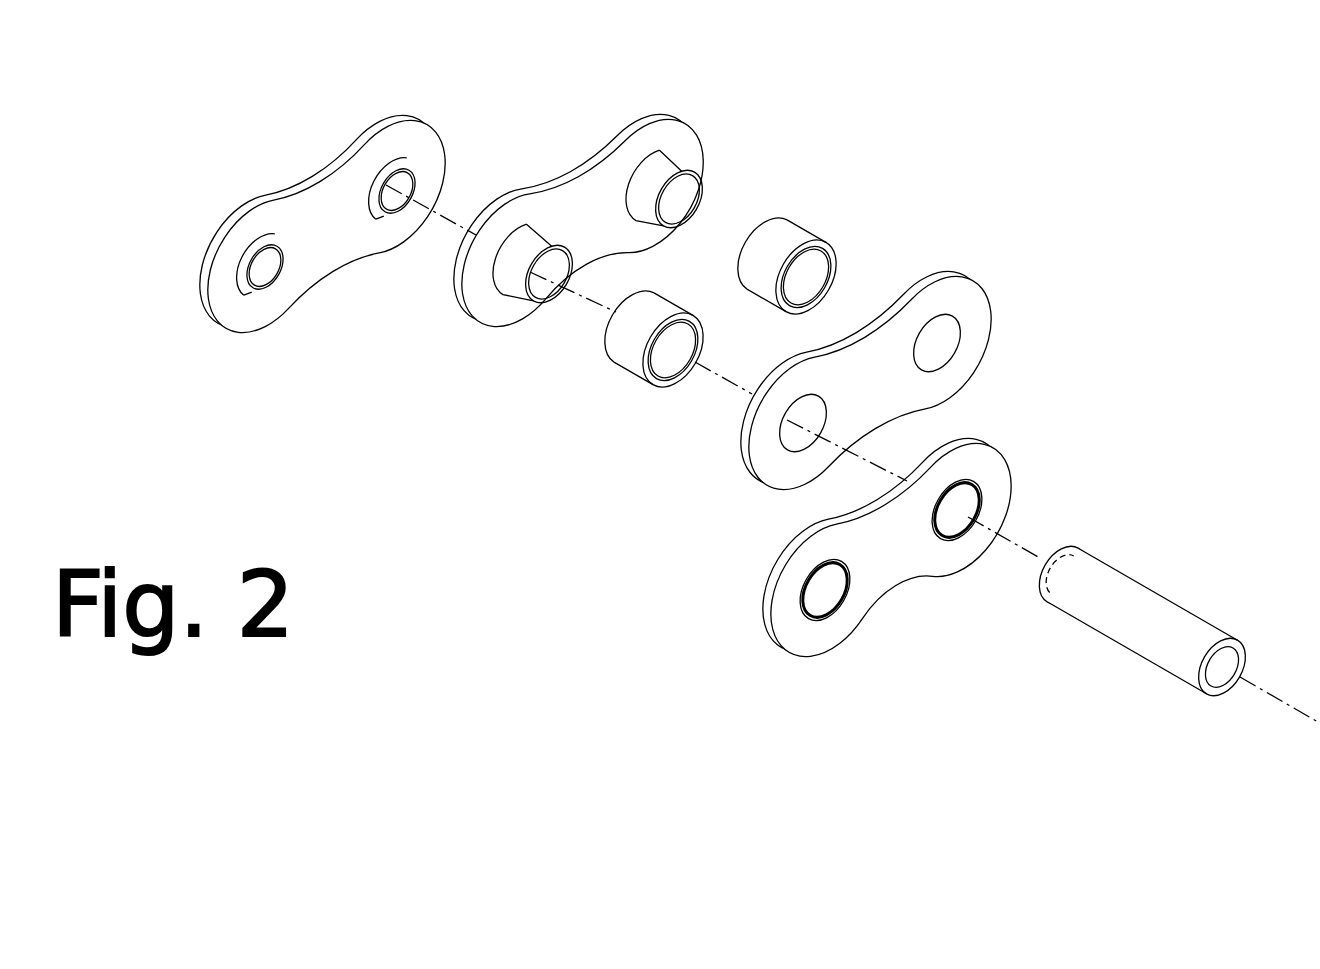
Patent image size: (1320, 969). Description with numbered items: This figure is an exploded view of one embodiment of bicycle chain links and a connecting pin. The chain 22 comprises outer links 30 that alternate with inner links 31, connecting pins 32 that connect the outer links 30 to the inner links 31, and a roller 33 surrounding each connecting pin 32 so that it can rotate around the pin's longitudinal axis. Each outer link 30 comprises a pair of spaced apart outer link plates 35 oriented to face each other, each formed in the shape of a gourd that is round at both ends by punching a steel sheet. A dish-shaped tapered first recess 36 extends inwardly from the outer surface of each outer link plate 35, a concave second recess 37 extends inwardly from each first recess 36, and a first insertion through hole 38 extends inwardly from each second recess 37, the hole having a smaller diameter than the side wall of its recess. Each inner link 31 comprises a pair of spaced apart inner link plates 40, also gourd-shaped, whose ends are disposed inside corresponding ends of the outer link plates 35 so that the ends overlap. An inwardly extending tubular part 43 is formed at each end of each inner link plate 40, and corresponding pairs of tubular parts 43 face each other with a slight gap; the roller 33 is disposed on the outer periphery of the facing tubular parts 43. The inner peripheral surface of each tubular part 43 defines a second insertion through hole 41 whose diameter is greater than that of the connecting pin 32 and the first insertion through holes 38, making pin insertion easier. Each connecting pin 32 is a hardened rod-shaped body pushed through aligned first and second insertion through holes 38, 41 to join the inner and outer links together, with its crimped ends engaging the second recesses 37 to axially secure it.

The chain 22 is at (338, 152).
The outer link 30 is at (437, 97).
The inner link 31 is at (578, 143).
The connecting pin 32 is at (1147, 600).
The roller 33 is at (660, 305).
The outer link plate 35 is at (437, 147).
The first recess 36 is at (390, 213).
The second recess 37 is at (958, 545).
The first insertion through hole 38 is at (933, 511).
The inner link plate 40 is at (567, 181).
The second insertion through hole 41 is at (673, 212).
The tubular part 43 is at (668, 166).